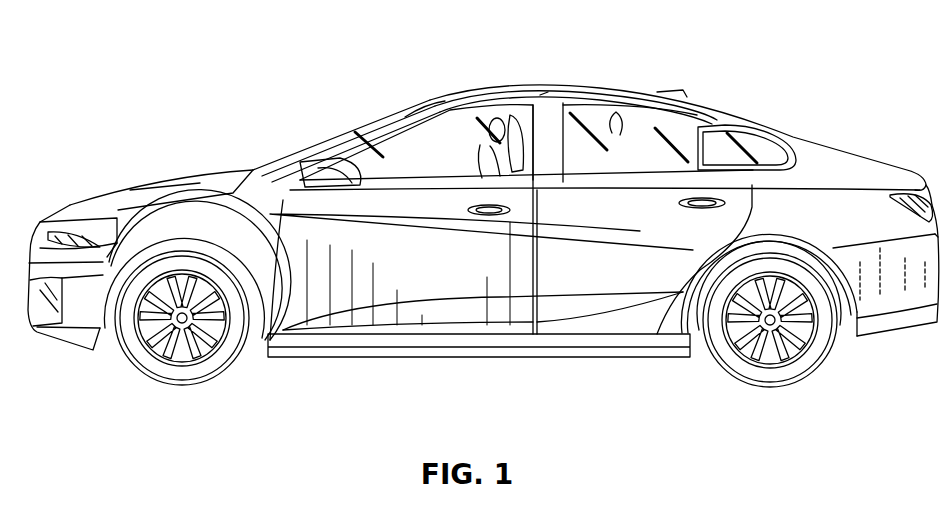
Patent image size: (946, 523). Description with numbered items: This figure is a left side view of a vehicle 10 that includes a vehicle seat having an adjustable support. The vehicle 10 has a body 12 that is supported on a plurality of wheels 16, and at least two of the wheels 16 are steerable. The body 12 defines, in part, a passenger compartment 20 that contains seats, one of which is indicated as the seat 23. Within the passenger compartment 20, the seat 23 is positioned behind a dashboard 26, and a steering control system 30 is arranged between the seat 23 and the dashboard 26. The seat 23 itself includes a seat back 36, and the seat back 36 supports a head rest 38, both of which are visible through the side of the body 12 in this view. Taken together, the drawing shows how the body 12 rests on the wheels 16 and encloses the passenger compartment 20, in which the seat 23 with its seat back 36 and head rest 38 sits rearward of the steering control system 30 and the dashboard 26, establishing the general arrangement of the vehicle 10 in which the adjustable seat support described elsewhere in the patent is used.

The vehicle 10 is at (268, 130).
The body 12 is at (548, 92).
The wheels 16 is at (207, 380).
The passenger compartment 20 is at (467, 133).
The seat 23 is at (533, 183).
The dashboard 26 is at (367, 160).
The steering control system 30 is at (426, 110).
The seat back 36 is at (490, 174).
The head rest 38 is at (497, 160).